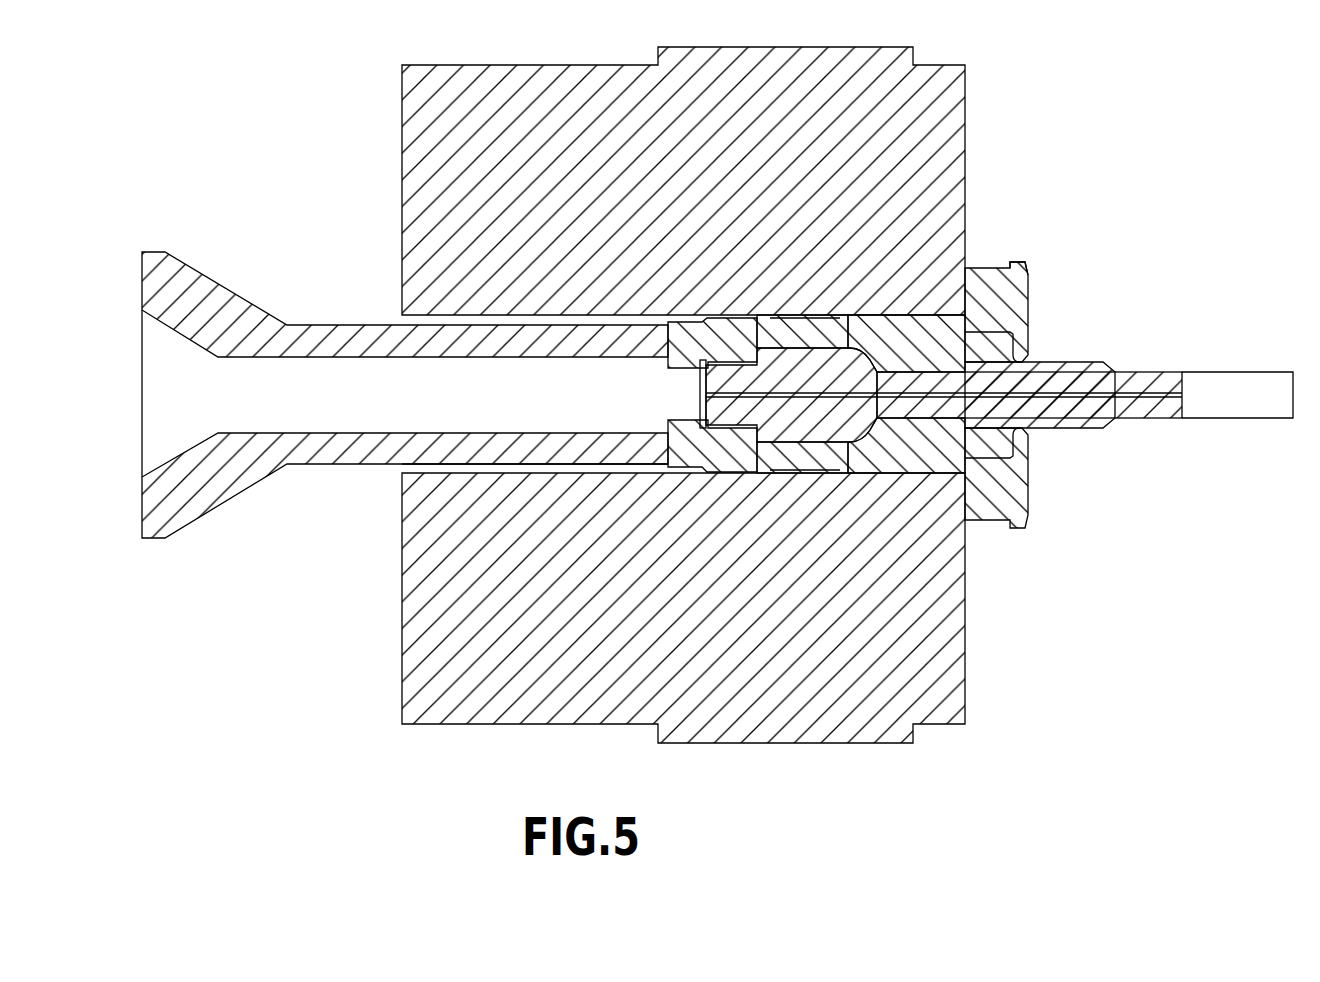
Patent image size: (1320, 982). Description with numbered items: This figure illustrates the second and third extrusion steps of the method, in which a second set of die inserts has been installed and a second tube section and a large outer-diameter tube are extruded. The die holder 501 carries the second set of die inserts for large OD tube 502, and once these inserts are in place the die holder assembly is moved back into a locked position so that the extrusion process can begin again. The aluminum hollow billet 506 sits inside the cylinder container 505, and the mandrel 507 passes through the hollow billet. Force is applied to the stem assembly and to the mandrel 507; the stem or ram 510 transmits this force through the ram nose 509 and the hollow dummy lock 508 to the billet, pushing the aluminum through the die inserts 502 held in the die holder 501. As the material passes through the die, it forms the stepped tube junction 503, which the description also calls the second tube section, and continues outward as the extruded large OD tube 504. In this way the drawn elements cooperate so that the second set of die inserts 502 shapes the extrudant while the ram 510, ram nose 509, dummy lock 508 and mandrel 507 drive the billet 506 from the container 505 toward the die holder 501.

The die holder 501 is at (1020, 262).
The second set of die inserts for large OD tube 502 is at (985, 352).
The stepped tube junction 503 is at (1100, 365).
The extruded large OD tube 504 is at (1046, 430).
The cylinder container 505 is at (862, 600).
The aluminum hollow billet 506 is at (792, 437).
The mandrel 507 is at (842, 462).
The hollow dummy lock 508 is at (570, 455).
The ram nose 509 is at (462, 450).
The stem or ram 510 is at (358, 345).